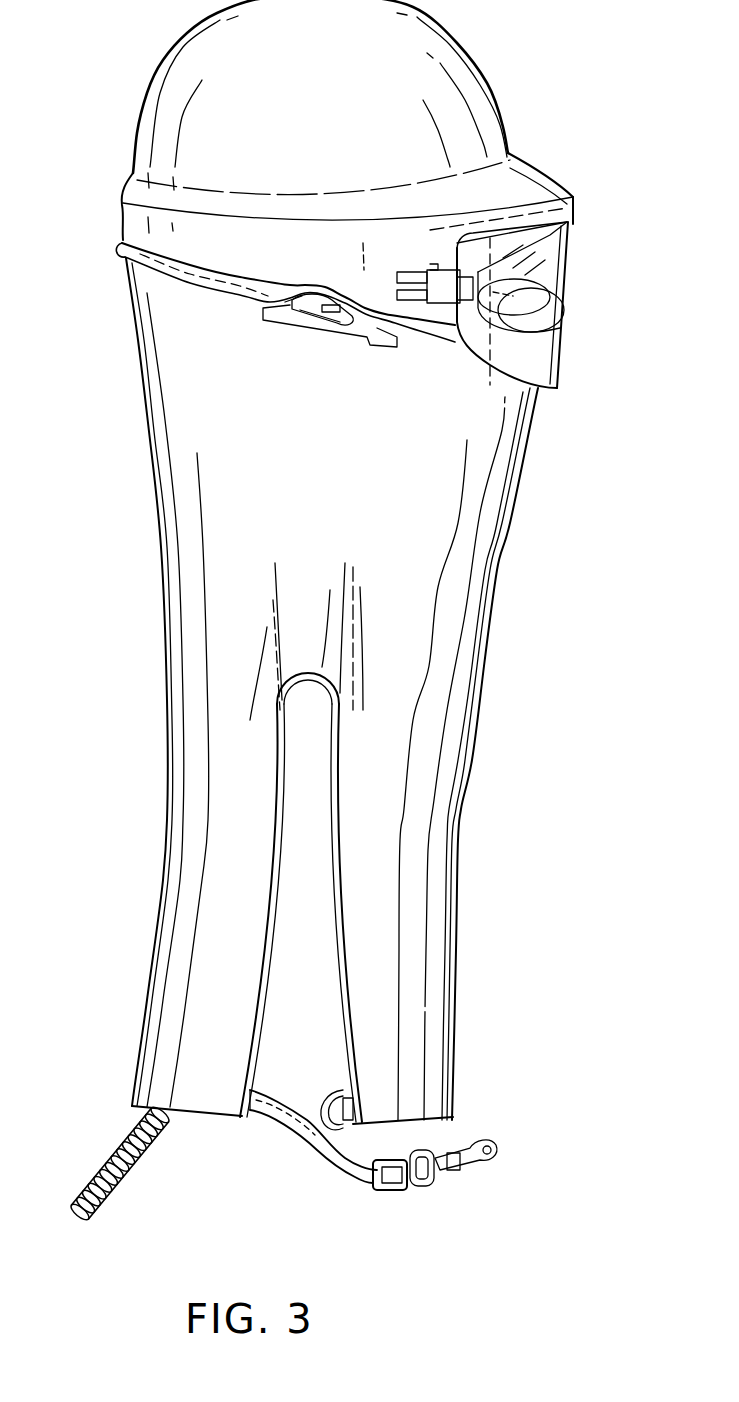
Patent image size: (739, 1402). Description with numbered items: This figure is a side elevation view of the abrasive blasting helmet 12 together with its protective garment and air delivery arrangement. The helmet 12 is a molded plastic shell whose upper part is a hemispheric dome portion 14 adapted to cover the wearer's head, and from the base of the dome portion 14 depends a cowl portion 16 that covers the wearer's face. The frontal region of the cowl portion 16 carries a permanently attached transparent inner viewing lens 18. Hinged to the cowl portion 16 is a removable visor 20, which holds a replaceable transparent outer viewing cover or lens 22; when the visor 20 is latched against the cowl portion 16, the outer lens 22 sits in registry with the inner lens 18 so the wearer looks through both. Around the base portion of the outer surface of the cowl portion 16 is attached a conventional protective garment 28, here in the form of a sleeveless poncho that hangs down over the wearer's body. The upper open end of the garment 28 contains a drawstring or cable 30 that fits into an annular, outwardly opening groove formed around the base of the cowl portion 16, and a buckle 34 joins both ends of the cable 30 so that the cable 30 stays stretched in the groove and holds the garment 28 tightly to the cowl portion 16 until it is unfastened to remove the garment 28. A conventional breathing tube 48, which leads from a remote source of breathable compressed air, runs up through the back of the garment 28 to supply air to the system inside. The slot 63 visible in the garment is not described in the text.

The abrasive blasting helmet 12 is at (549, 131).
The hemispheric dome portion 14 is at (455, 62).
The cowl portion 16 is at (232, 263).
The transparent inner viewing lens 18 is at (560, 281).
The removable visor 20 is at (567, 362).
The transparent outer viewing cover or lens 22 is at (573, 247).
The protective garment 28 is at (490, 523).
The drawstring or cable 30 is at (367, 333).
The buckle 34 is at (335, 323).
The breathing tube 48 is at (110, 1167).
The slot 63 is at (283, 767).